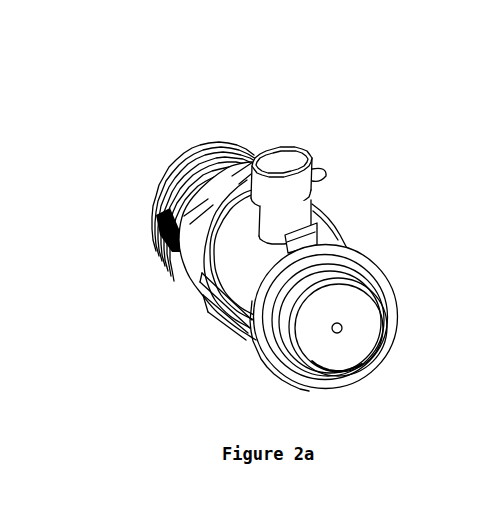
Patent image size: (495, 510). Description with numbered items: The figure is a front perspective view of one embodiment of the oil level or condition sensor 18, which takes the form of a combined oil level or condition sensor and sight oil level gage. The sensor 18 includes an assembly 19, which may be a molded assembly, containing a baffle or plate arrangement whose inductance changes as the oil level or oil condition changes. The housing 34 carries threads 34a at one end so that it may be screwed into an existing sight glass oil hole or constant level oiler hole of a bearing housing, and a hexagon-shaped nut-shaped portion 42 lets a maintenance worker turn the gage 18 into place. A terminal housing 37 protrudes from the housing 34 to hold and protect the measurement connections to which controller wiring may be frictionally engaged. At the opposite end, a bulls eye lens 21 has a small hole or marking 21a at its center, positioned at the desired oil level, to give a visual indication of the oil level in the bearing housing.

The oil level or condition sensor 18 is at (147, 130).
The assembly 19 is at (385, 260).
The bulls eye lens 21 is at (336, 349).
The hole or marking 21a is at (343, 327).
The housing 34 is at (347, 221).
The threads 34a is at (250, 174).
The terminal housing 37 is at (340, 187).
The nut-shaped portion 42 is at (181, 252).